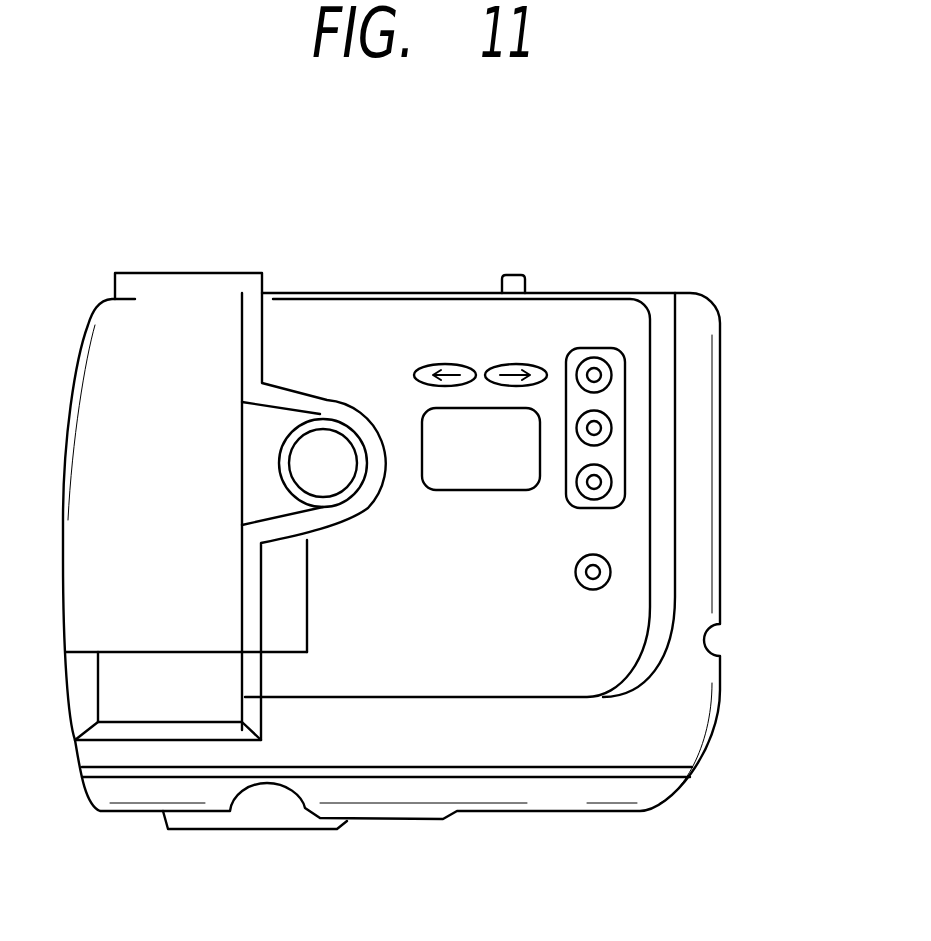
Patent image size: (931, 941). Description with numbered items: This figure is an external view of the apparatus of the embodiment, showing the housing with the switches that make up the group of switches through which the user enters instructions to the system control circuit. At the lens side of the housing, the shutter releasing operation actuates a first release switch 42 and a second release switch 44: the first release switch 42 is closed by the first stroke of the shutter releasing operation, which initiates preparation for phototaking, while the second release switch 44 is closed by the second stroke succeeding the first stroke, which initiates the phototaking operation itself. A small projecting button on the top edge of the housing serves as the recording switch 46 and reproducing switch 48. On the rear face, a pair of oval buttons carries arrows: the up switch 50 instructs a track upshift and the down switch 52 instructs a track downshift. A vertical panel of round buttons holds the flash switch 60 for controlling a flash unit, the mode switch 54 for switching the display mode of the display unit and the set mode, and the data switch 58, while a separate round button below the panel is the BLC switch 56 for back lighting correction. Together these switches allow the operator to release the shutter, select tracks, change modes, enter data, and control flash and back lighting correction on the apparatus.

The first release switch 42 is at (291, 342).
The second release switch 44 is at (320, 442).
The recording switch 46 is at (597, 241).
The reproducing switch 48 is at (527, 272).
The up switch 50 is at (435, 360).
The down switch 52 is at (508, 357).
The mode switch 54 is at (594, 428).
The BLC switch 56 is at (593, 572).
The data switch 58 is at (594, 482).
The flash switch 60 is at (594, 375).